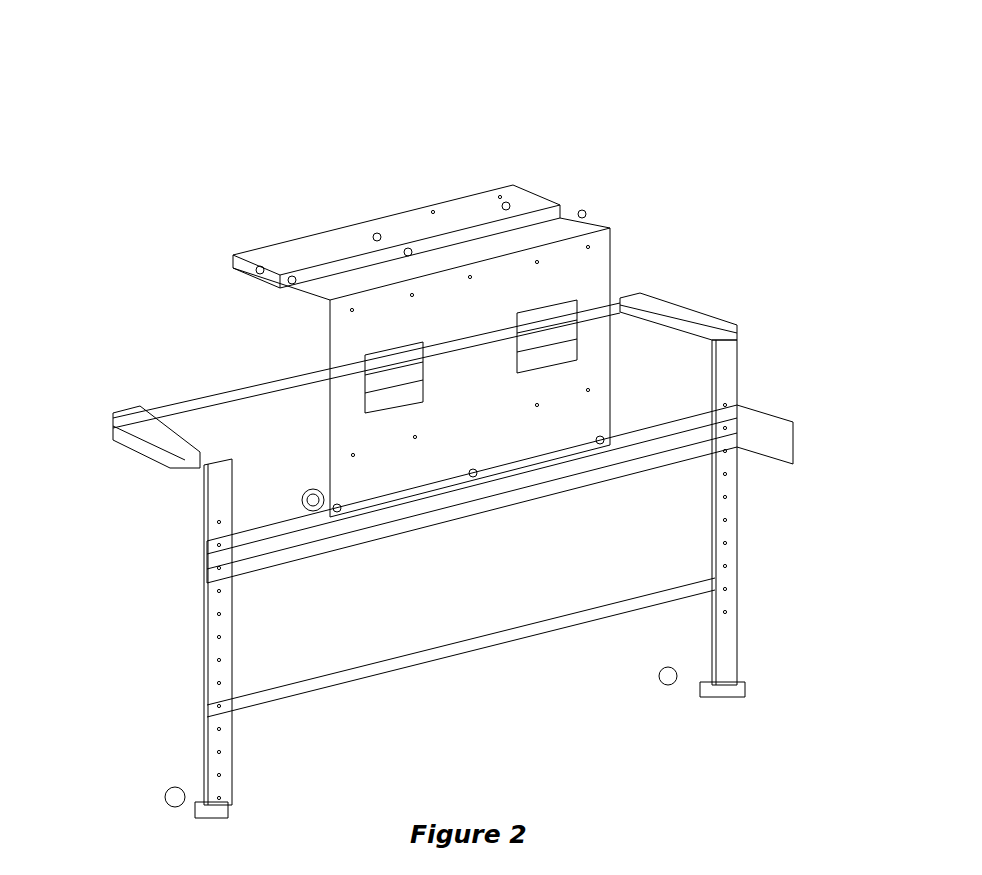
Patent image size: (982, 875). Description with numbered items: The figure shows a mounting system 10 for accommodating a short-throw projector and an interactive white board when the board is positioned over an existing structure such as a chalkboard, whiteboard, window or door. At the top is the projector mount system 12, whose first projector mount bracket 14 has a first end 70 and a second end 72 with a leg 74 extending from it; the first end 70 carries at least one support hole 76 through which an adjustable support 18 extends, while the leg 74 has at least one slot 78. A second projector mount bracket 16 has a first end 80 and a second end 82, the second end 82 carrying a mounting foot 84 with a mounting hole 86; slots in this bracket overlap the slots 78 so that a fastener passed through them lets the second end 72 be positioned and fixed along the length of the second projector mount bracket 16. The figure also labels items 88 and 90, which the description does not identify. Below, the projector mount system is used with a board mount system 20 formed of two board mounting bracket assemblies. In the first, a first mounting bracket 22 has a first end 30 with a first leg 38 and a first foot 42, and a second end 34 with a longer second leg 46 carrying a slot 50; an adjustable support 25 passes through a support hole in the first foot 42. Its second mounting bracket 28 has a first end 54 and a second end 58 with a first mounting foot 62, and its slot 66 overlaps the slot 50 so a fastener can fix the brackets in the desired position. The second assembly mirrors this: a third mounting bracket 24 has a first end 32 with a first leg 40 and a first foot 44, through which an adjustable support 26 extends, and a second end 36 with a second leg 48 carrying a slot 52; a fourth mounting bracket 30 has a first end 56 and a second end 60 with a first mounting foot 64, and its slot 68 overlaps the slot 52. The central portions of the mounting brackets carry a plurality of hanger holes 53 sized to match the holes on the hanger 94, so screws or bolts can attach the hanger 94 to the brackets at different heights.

The mounting system 10 is at (268, 108).
The projector mount system 12 is at (597, 255).
The first projector mount bracket 14 is at (642, 294).
The second projector mount bracket 16 is at (433, 235).
The adjustable support 18 is at (298, 492).
The board mount system 20 is at (163, 580).
The first mounting bracket 22 is at (208, 625).
The third mounting bracket 24 is at (733, 433).
The adjustable support 25 is at (165, 792).
The adjustable support 26 is at (665, 675).
The second mounting bracket 28 is at (143, 433).
The fourth mounting bracket 30 is at (720, 317).
The first end 32 is at (742, 685).
The second end 34 is at (172, 465).
The second end 36 is at (708, 338).
The first leg 38 is at (197, 803).
The first leg 40 is at (697, 685).
The first foot 42 is at (202, 820).
The first foot 44 is at (710, 700).
The second leg 46 is at (208, 455).
The second leg 48 is at (727, 336).
The slot 50 is at (178, 445).
The slot 52 is at (695, 335).
The hanger holes 53 is at (722, 503).
The first end 54 is at (158, 423).
The first end 56 is at (663, 320).
The second end 58 is at (125, 400).
The second end 60 is at (644, 315).
The first mounting foot 62 is at (122, 420).
The first mounting foot 64 is at (648, 310).
The slot 66 is at (140, 437).
The slot 68 is at (683, 332).
The first end 70 is at (545, 475).
The second end 72 is at (300, 298).
The leg 74 is at (302, 248).
The support hole 76 is at (337, 508).
The slot 78 is at (292, 280).
The first end 80 is at (253, 285).
The second end 82 is at (230, 252).
The mounting foot 84 is at (347, 233).
The mounting hole 86 is at (303, 247).
The hook tab 88 is at (260, 270).
The flange 90 is at (518, 210).
The hanger 94 is at (505, 632).